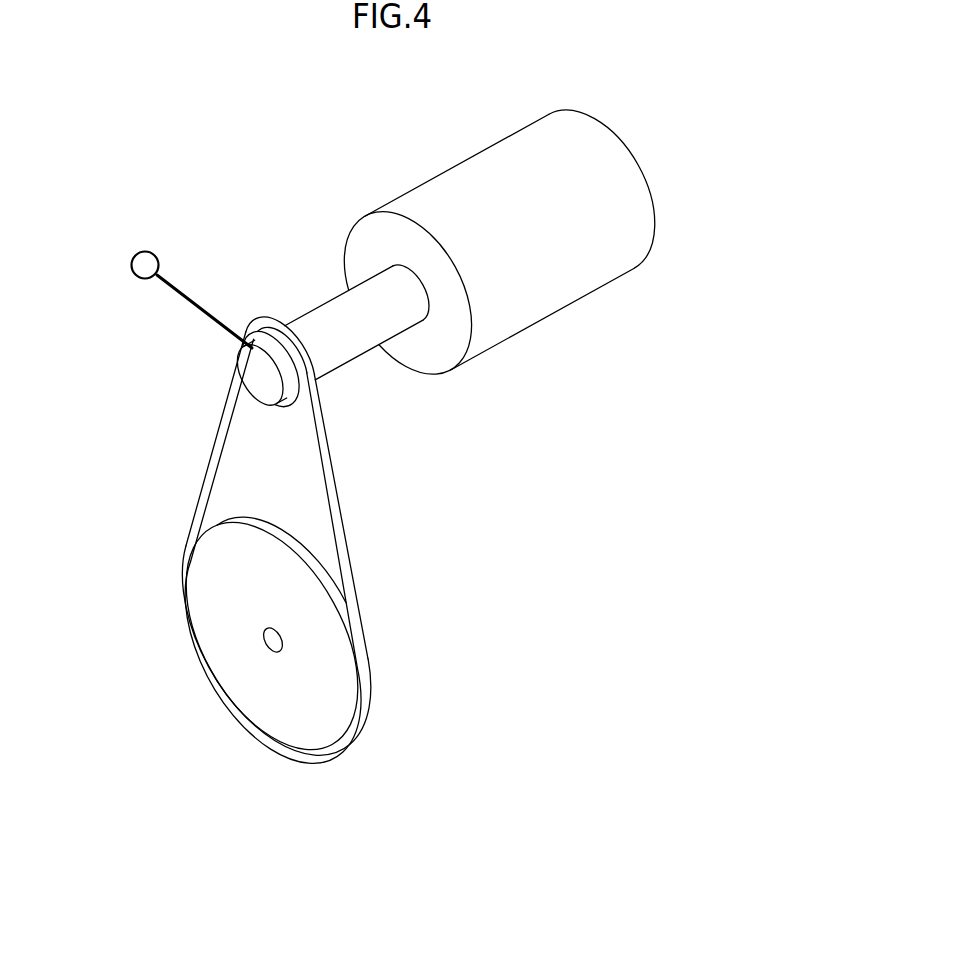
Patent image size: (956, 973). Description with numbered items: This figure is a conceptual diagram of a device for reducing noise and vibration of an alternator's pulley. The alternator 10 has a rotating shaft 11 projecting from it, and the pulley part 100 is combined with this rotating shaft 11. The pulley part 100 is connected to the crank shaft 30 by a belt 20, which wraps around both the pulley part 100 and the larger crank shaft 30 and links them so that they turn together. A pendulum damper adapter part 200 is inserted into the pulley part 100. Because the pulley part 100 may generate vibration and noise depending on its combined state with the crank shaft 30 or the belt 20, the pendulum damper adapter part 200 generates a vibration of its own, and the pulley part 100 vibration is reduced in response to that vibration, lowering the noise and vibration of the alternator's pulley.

The alternator 10 is at (562, 287).
The rotating shaft 11 is at (335, 317).
The pulley part 100 is at (262, 318).
The belt 20 is at (337, 503).
The crank shaft 30 is at (285, 713).
The pendulum damper adapter part 200 is at (138, 254).